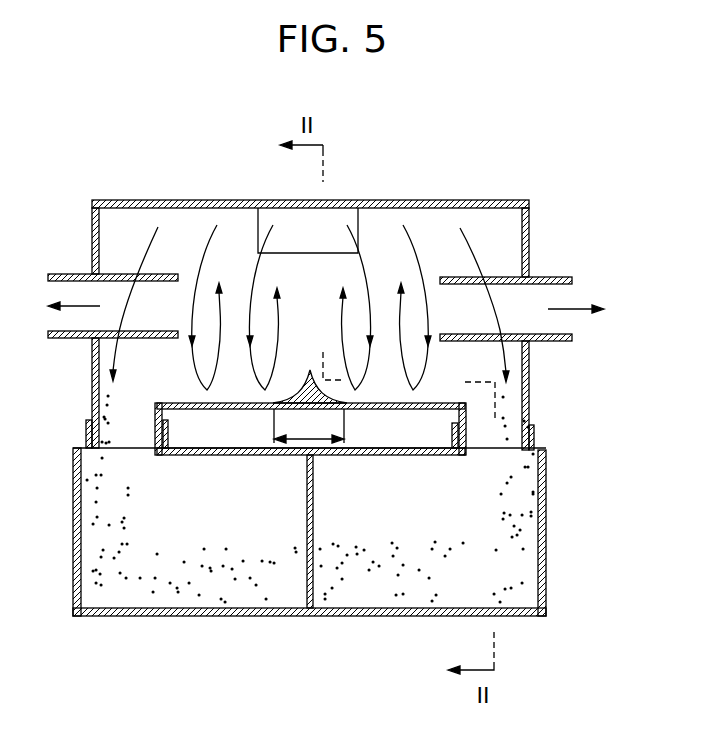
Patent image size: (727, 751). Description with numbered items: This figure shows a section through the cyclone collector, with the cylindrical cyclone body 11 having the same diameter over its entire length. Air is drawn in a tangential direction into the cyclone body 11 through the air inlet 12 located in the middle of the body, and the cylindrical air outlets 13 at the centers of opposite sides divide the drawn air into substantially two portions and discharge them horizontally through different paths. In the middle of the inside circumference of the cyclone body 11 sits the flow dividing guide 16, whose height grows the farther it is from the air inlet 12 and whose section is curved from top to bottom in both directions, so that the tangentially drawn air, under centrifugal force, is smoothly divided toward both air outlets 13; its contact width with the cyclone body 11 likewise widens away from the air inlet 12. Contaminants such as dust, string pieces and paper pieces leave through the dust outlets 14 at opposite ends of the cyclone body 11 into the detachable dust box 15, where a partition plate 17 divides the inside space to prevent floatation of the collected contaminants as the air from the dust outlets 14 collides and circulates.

The cyclone body 11 is at (453, 202).
The air inlet 12 is at (322, 225).
The air outlets 13 is at (542, 292).
The dust outlets 14 is at (505, 423).
The dust box 15 is at (548, 549).
The flow dividing guide 16 is at (298, 380).
The partition plate 17 is at (305, 583).